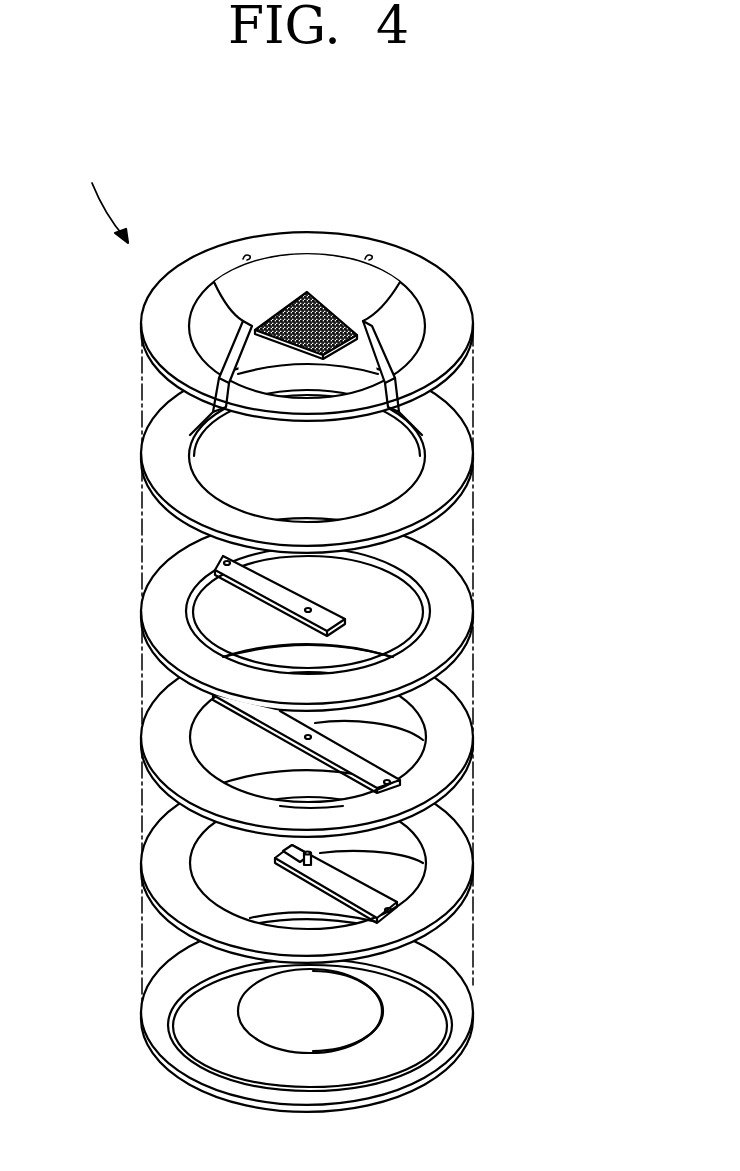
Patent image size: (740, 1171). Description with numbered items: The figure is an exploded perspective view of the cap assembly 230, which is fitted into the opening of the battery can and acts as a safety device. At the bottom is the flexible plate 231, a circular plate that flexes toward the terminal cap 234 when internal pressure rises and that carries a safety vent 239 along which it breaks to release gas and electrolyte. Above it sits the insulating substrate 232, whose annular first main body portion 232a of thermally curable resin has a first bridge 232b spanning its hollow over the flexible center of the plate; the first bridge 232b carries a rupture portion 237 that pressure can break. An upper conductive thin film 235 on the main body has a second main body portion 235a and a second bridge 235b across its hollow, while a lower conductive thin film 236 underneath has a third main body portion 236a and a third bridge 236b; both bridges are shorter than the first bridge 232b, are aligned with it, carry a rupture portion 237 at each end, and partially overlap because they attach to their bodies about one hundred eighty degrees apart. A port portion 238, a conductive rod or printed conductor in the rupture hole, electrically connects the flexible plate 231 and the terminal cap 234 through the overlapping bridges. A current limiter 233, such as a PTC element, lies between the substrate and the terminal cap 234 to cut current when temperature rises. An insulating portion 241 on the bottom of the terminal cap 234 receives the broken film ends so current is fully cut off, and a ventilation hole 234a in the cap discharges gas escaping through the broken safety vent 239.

The cap assembly 230 is at (94, 201).
The flexible plate 231 is at (460, 1018).
The insulating substrate 232 is at (400, 740).
The first main body portion 232a is at (447, 745).
The first bridge 232b is at (353, 763).
The current limiter 233 is at (457, 443).
The terminal cap 234 is at (457, 314).
The ventilation hole 234a is at (383, 357).
The upper conductive thin film 235 is at (397, 594).
The second main body portion 235a is at (450, 588).
The second bridge 235b is at (327, 608).
The lower conductive thin film 236 is at (400, 866).
The third main body portion 236a is at (447, 866).
The third bridge 236b is at (355, 883).
The rupture portion 237 is at (227, 563).
The port portion 238 is at (290, 856).
The safety vent 239 is at (240, 1012).
The insulating portion 241 is at (328, 310).